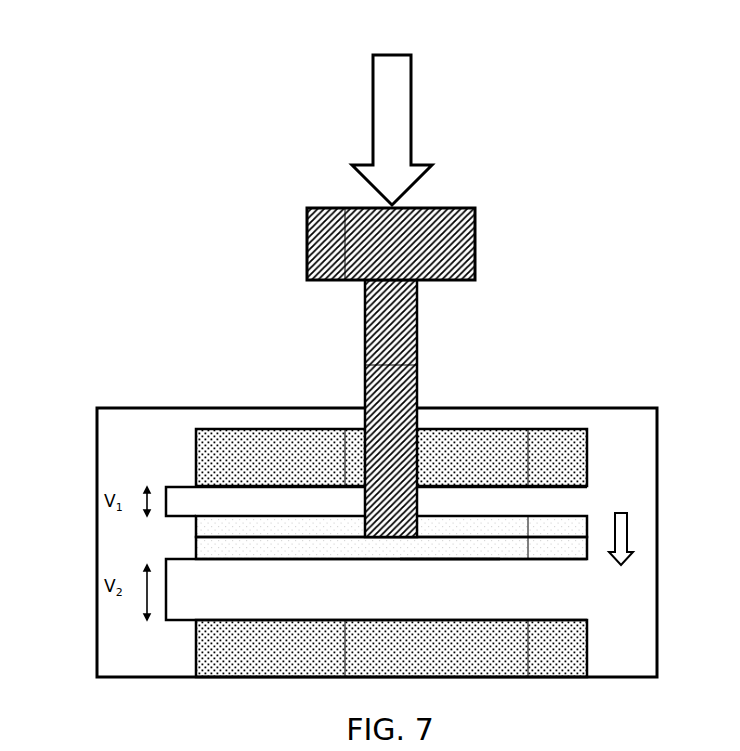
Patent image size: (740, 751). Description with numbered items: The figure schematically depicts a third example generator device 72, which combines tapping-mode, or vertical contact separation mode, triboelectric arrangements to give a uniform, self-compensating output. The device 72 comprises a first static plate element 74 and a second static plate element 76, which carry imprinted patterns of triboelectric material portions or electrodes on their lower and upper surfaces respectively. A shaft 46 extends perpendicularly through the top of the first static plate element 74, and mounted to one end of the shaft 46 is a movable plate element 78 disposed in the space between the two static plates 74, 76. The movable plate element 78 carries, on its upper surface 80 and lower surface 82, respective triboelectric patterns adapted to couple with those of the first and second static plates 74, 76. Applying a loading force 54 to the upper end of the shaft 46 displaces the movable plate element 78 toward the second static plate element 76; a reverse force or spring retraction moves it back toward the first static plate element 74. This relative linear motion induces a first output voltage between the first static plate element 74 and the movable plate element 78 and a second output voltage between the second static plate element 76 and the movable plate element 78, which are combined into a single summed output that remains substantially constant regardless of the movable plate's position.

The generator device 72 is at (88, 126).
The loading force 54 is at (413, 73).
The shaft 46 is at (418, 340).
The first static plate element 74 is at (570, 453).
The second static plate element 76 is at (560, 645).
The upper surface of movable plate element 80 is at (567, 510).
The lower surface of movable plate element 82 is at (548, 562).
The movable plate element 78 is at (480, 565).